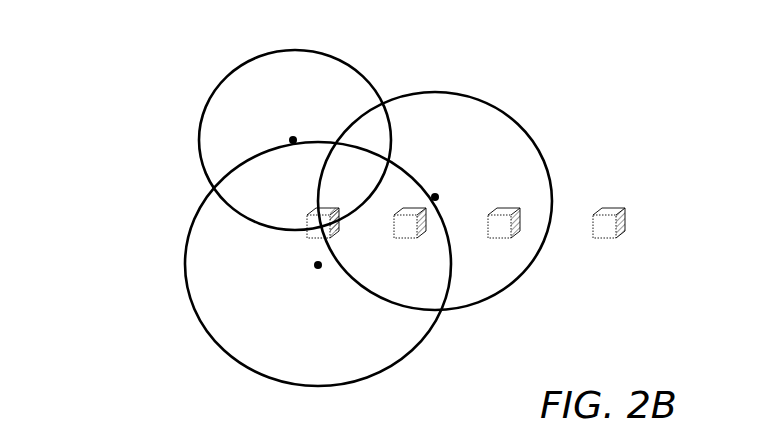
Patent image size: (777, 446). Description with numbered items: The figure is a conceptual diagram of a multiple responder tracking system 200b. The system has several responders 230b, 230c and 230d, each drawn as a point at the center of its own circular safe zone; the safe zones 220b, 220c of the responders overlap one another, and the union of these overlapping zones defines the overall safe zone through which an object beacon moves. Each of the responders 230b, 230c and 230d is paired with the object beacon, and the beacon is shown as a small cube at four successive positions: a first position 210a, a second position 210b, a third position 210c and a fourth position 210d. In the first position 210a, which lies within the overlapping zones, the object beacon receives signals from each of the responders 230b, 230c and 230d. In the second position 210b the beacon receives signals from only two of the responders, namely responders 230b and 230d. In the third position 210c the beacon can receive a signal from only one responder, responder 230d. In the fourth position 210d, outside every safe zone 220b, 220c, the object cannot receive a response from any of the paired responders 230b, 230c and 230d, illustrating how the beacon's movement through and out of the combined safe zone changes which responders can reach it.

The tracking system 200b is at (582, 113).
The first position 210a is at (318, 238).
The second position 210b is at (408, 238).
The third position 210c is at (503, 238).
The fourth position 210d is at (608, 238).
The safe zone 220b is at (185, 247).
The safe zone 220c is at (200, 108).
The responder 230b is at (315, 262).
The responder 230c is at (293, 136).
The responder 230d is at (437, 193).